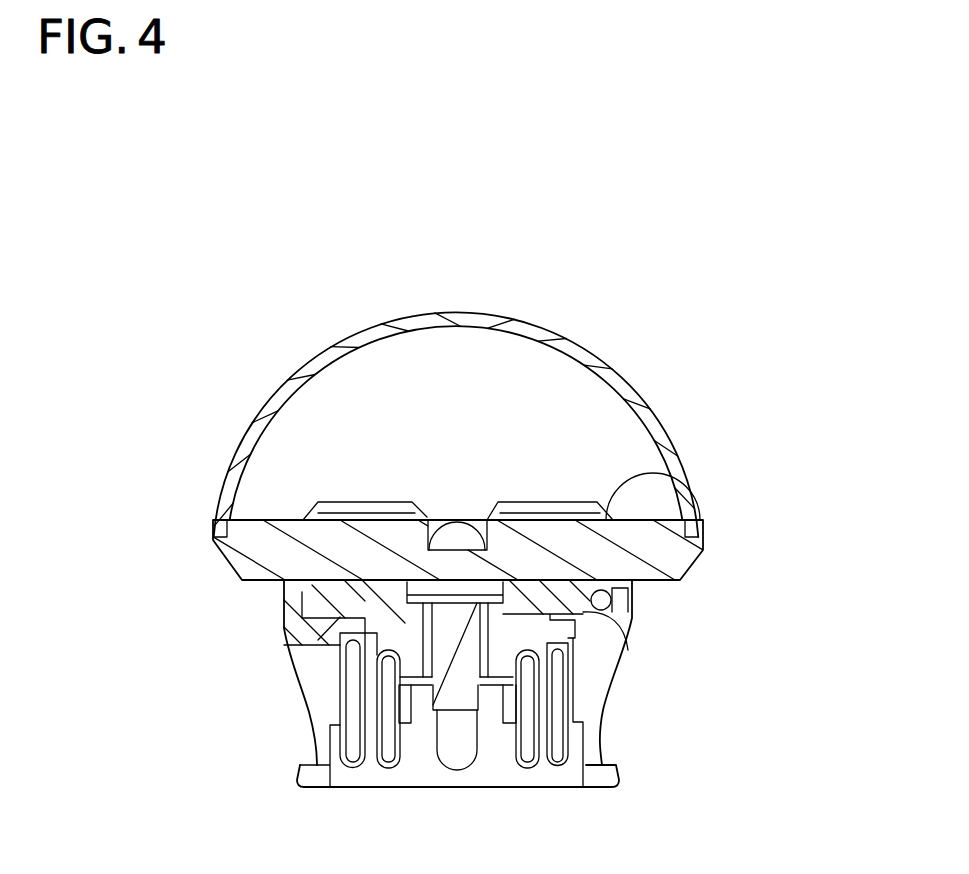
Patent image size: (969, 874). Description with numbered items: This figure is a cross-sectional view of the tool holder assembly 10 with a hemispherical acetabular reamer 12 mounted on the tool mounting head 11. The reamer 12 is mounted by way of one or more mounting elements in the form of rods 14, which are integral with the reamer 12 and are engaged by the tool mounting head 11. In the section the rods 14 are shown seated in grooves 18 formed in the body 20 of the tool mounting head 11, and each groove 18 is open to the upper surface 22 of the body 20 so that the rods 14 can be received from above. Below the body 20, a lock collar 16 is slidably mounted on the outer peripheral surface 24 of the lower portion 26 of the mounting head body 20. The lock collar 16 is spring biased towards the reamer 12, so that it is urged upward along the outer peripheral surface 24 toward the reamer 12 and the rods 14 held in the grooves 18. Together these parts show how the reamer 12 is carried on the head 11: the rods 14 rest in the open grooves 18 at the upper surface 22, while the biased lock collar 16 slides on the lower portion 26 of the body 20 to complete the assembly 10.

The tool holder assembly 10 is at (272, 712).
The tool mounting head 11 is at (293, 592).
The hemispherical acetabular reamer 12 is at (500, 308).
The rods 14 is at (457, 537).
The lock collar 16 is at (310, 586).
The grooves 18 is at (447, 477).
The body 20 is at (656, 477).
The upper surface 22 is at (547, 500).
The outer peripheral surface 24 is at (634, 612).
The lower portion 26 is at (620, 660).